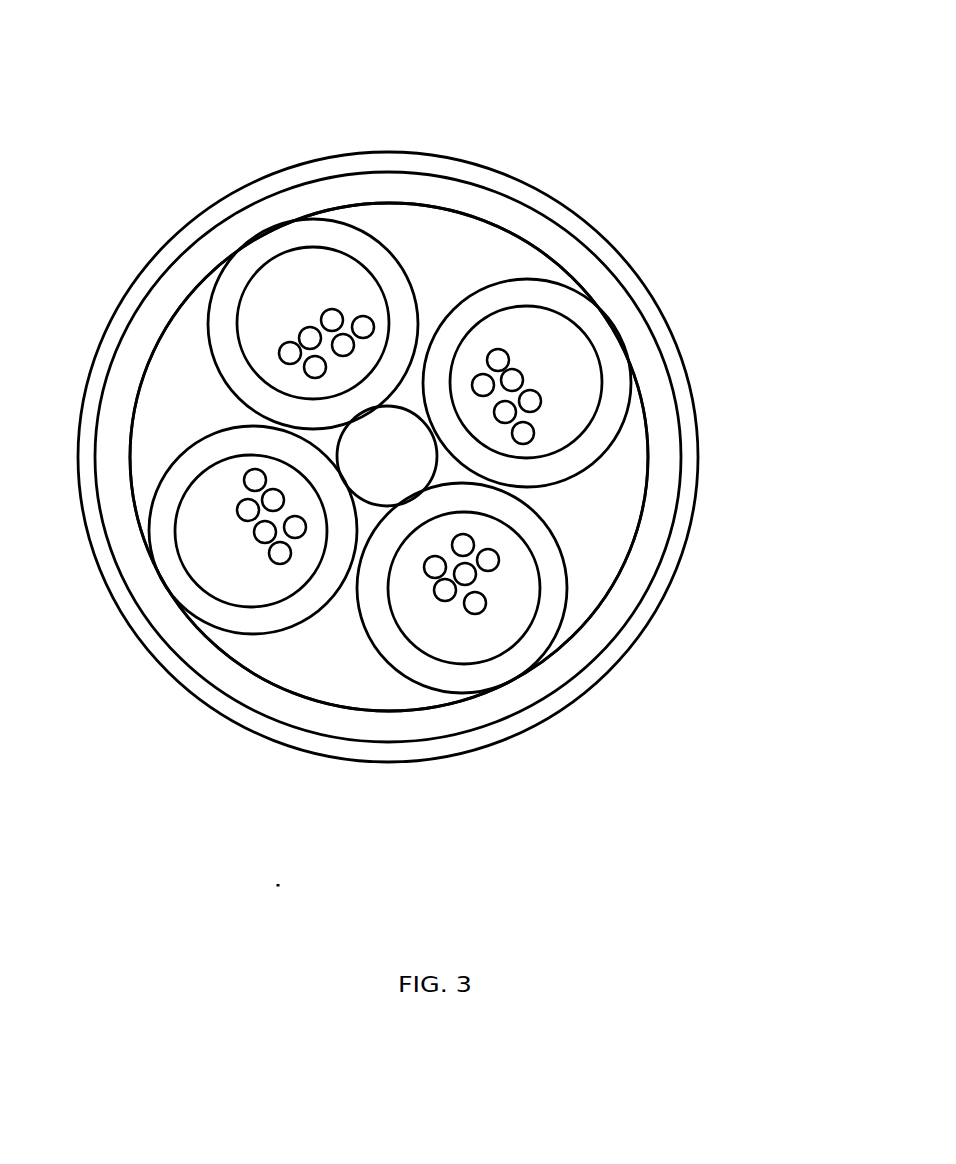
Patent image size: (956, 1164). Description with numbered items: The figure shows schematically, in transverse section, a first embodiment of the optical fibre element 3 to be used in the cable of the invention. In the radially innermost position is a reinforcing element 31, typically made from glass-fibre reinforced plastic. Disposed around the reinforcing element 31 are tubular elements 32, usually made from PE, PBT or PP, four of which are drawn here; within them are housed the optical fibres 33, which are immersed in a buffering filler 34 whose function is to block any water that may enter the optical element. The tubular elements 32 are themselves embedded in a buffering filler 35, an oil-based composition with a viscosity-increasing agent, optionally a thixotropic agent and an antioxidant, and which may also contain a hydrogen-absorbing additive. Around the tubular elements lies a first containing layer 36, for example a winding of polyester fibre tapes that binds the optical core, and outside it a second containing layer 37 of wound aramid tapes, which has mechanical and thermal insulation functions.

The optical fibre element 3 is at (413, 152).
The reinforcing element 31 is at (393, 427).
The tubular elements 32 is at (583, 313).
The optical fibres 33 is at (537, 401).
The buffering filler 34 is at (562, 428).
The buffering filler 35 is at (308, 663).
The first containing layer 36 is at (570, 658).
The second containing layer 37 is at (535, 715).